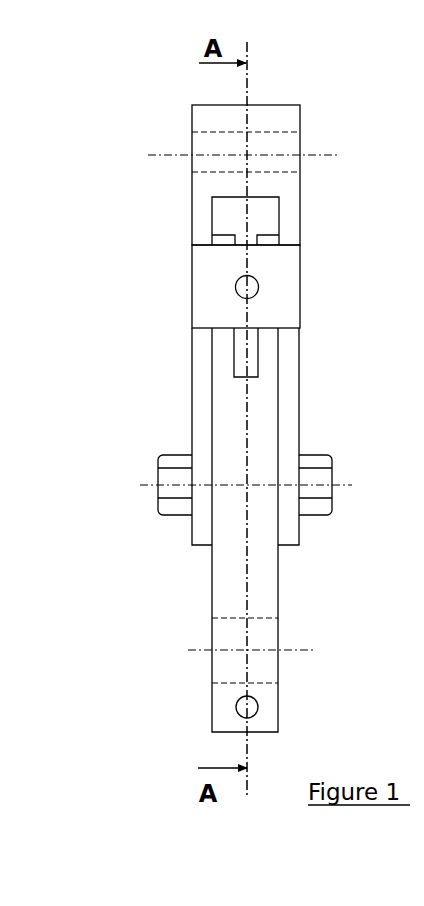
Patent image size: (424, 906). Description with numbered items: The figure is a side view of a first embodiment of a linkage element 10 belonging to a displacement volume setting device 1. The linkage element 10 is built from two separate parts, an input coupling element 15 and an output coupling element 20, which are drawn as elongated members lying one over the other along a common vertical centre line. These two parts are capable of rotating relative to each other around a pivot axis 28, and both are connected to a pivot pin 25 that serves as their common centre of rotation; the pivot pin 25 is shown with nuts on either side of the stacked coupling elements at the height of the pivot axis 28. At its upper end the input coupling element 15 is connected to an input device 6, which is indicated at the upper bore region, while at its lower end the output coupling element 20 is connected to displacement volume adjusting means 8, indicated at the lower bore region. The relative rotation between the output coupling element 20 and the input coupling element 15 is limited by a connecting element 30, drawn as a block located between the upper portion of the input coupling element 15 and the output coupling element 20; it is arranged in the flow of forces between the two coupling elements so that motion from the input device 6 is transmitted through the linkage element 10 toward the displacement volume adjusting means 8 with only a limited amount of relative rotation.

The displacement volume setting device 1 is at (120, 575).
The input device 6 is at (207, 152).
The displacement volume adjusting means 8 is at (223, 657).
The linkage element 10 is at (203, 279).
The input coupling element 15 is at (275, 107).
The output coupling element 20 is at (241, 530).
The pivot pin 25 is at (318, 460).
The pivot axis 28 is at (143, 485).
The connecting element 30 is at (210, 277).